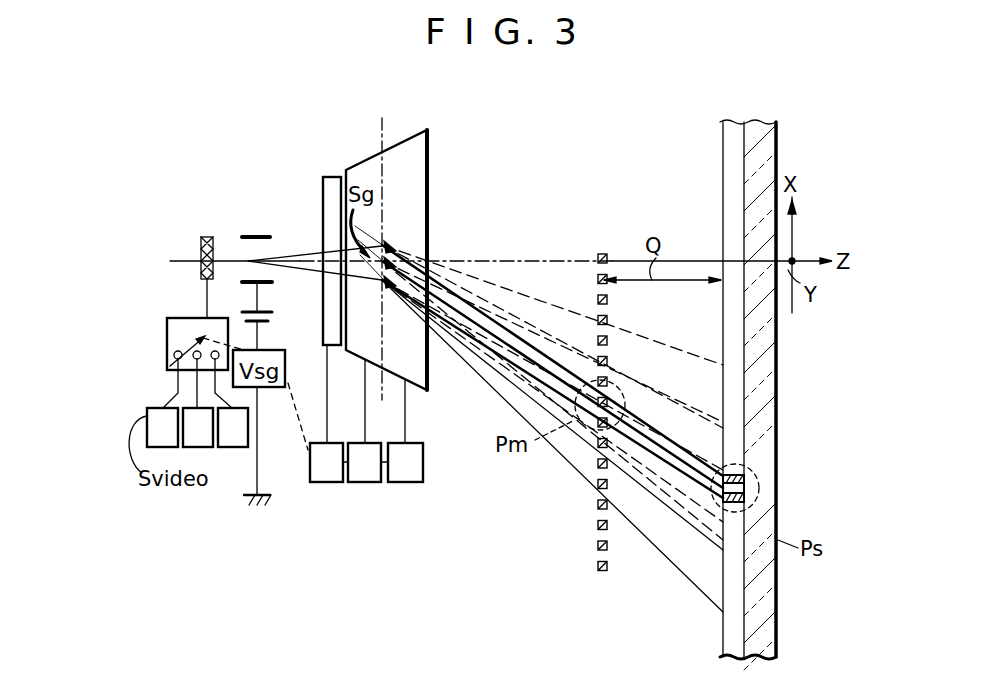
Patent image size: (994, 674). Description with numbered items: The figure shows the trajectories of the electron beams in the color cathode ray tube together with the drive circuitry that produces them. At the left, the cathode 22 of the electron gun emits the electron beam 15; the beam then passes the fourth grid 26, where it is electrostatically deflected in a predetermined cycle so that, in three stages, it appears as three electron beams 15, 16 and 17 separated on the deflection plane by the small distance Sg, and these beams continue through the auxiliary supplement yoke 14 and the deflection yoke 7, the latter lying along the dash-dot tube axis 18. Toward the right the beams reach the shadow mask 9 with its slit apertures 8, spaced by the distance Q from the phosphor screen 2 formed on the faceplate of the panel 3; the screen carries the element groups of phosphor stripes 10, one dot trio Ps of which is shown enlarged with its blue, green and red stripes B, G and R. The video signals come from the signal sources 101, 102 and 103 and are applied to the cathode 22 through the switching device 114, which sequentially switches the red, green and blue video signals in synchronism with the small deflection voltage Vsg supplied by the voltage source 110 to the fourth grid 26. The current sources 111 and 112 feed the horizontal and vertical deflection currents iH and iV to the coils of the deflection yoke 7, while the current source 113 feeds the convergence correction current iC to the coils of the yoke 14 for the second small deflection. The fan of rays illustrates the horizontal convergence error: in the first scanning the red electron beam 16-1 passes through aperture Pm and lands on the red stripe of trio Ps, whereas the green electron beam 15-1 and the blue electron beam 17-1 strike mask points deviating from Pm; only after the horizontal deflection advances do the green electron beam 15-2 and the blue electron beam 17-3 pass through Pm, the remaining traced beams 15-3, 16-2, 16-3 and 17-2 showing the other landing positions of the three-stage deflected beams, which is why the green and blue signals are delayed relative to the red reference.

The phosphor screen 2 is at (723, 160).
The panel 3 is at (778, 157).
The deflection yoke 7 is at (414, 142).
The grating plate 8 is at (598, 534).
The shadow mask 9 is at (598, 567).
The phosphor stripes 10 is at (743, 475).
The auxiliary supplement yoke 14 is at (326, 176).
The electron beam 15 is at (270, 237).
The apparent electron beam 16 is at (315, 250).
The apparent electron beam 17 is at (293, 276).
The optical axis line 18 is at (376, 136).
The cathode 22 is at (206, 235).
The fourth grid 26 is at (258, 226).
The signal source 101 is at (246, 448).
The signal source 102 is at (181, 400).
The signal source 103 is at (147, 415).
The voltage source 110 is at (272, 319).
The current source 111 is at (405, 482).
The current source 112 is at (365, 482).
The current source 113 is at (327, 482).
The switching device 114 is at (167, 332).
The green electron beam 15-1 is at (660, 500).
The green electron beam 15-2 is at (652, 442).
The blue beam component 15-3 is at (640, 384).
The red electron beam 16-1 is at (652, 448).
The beam component 16-2 is at (672, 400).
The beam component 16-3 is at (645, 340).
The blue electron beam 17-1 is at (662, 553).
The beam component 17-2 is at (643, 480).
The blue electron beam 17-3 is at (641, 409).
The blue phosphor stripe B is at (745, 478).
The green phosphor stripe G is at (745, 489).
The red phosphor stripe R is at (745, 500).